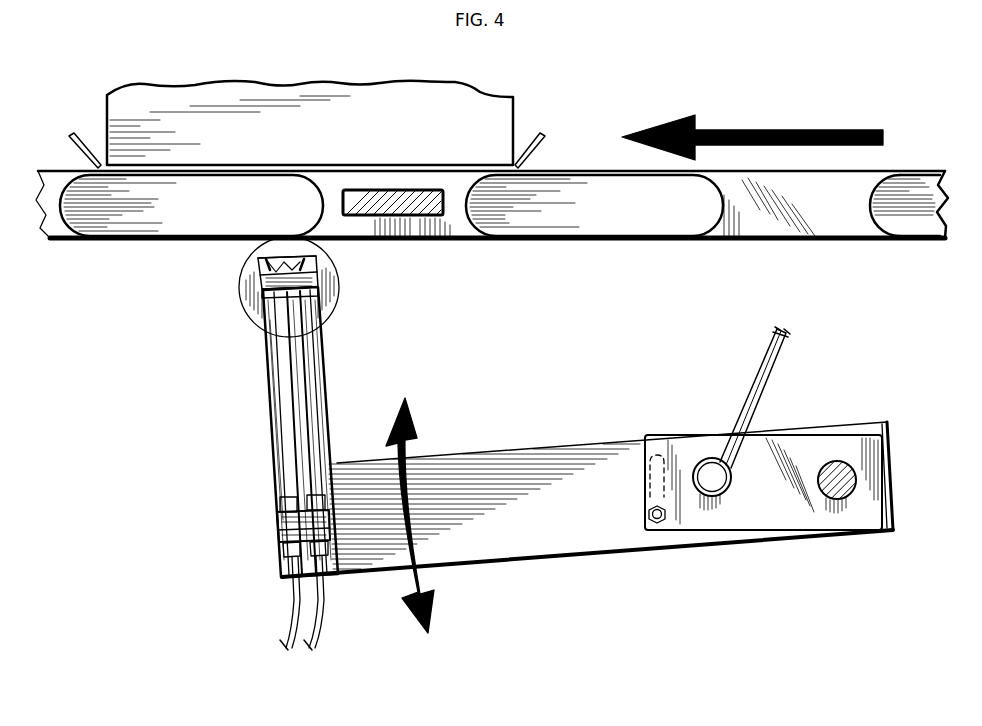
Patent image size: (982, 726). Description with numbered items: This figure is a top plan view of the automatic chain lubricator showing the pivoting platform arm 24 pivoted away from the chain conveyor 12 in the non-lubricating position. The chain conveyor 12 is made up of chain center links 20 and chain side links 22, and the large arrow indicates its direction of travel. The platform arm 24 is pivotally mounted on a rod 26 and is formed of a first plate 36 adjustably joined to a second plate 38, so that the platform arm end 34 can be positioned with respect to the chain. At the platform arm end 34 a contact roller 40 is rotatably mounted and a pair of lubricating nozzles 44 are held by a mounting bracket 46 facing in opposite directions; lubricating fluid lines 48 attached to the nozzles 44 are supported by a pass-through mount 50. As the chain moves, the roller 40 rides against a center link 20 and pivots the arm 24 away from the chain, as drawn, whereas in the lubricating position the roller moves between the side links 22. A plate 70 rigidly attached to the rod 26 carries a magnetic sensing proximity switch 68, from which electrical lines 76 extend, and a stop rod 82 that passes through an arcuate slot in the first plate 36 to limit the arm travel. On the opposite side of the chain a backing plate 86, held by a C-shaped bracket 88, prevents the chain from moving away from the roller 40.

The chain conveyor 12 is at (741, 215).
The chain center link 20 is at (408, 228).
The chain side links 22 is at (104, 222).
The platform arm 24 is at (266, 428).
The rod 26 is at (836, 461).
The platform arm end 34 is at (272, 256).
The first plate 36 is at (518, 538).
The second plate 38 is at (326, 372).
The contact roller 40 is at (333, 312).
The lubricating nozzles 44 is at (262, 257).
The mounting bracket 46 is at (270, 291).
The lubricating fluid lines 48 is at (306, 596).
The pass-through mount 50 is at (286, 526).
The magnetic sensing proximity switch 68 is at (718, 480).
The plate 70 is at (683, 436).
The electrical lines 76 is at (772, 340).
The stop rod 82 is at (650, 511).
The backing plate 86 is at (316, 166).
The C-shaped bracket 88 is at (288, 102).